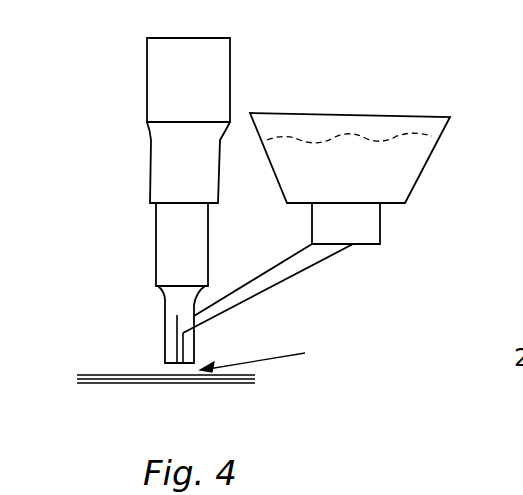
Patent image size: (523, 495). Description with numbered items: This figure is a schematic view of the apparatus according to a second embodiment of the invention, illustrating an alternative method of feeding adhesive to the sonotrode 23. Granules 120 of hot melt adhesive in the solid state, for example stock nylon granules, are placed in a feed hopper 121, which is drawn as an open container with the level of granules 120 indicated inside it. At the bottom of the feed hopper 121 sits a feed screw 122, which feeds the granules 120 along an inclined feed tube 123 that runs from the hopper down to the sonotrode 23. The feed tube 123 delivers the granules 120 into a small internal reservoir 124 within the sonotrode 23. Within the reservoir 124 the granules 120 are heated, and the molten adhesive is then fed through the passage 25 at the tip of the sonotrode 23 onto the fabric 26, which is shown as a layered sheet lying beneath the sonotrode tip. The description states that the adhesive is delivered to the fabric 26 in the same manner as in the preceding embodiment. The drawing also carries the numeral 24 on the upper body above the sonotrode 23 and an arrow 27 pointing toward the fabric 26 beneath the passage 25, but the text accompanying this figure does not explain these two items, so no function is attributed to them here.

The sonotrode 23 is at (165, 307).
The dispenser head 24 is at (230, 80).
The passage 25 is at (165, 345).
The fabric 26 is at (105, 372).
The direction of movement arrow 27 is at (271, 356).
The granules 120 is at (338, 137).
The feed hopper 121 is at (413, 192).
The feed screw 122 is at (380, 231).
The feed tube 123 is at (293, 277).
The internal reservoir 124 is at (177, 315).